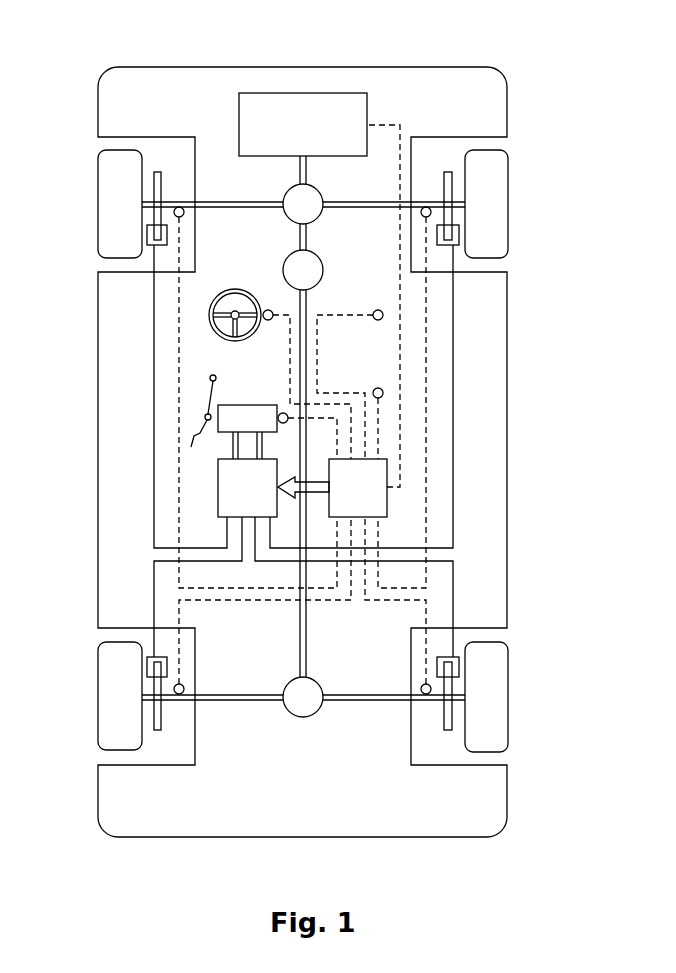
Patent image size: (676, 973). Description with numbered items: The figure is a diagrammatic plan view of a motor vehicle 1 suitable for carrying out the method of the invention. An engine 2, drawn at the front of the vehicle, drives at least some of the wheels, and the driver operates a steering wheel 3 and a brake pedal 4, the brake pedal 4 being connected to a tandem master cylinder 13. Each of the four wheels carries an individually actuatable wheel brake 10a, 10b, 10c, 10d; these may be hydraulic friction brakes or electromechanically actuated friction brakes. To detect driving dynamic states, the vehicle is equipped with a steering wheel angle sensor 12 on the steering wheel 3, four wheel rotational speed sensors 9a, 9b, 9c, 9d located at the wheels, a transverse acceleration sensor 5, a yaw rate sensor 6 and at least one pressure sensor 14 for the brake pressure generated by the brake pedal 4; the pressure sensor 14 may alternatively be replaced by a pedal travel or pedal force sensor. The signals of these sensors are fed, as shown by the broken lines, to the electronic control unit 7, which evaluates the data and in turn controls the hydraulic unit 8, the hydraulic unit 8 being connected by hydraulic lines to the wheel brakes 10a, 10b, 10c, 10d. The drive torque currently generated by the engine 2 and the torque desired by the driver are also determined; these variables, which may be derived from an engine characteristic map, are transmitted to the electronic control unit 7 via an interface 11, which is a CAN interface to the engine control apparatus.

The motor vehicle 1 is at (467, 67).
The engine 2 is at (344, 93).
The steering wheel 3 is at (209, 318).
The brake pedal 4 is at (205, 413).
The transverse acceleration sensor 5 is at (378, 310).
The yaw rate sensor 6 is at (378, 388).
The electronic control unit 7 is at (387, 503).
The hydraulic unit 8 is at (218, 487).
The wheel rotational speed sensor 9a is at (184, 212).
The wheel rotational speed sensor 9b is at (421, 213).
The wheel rotational speed sensor 9c is at (421, 688).
The wheel rotational speed sensor 9d is at (184, 688).
The wheel brake 10a is at (147, 238).
The wheel brake 10b is at (508, 230).
The wheel brake 10c is at (465, 660).
The wheel brake 10d is at (147, 665).
The interface 11 is at (402, 338).
The steering wheel angle sensor 12 is at (268, 310).
The tandem master cylinder 13 is at (236, 405).
The pressure sensor 14 is at (279, 412).